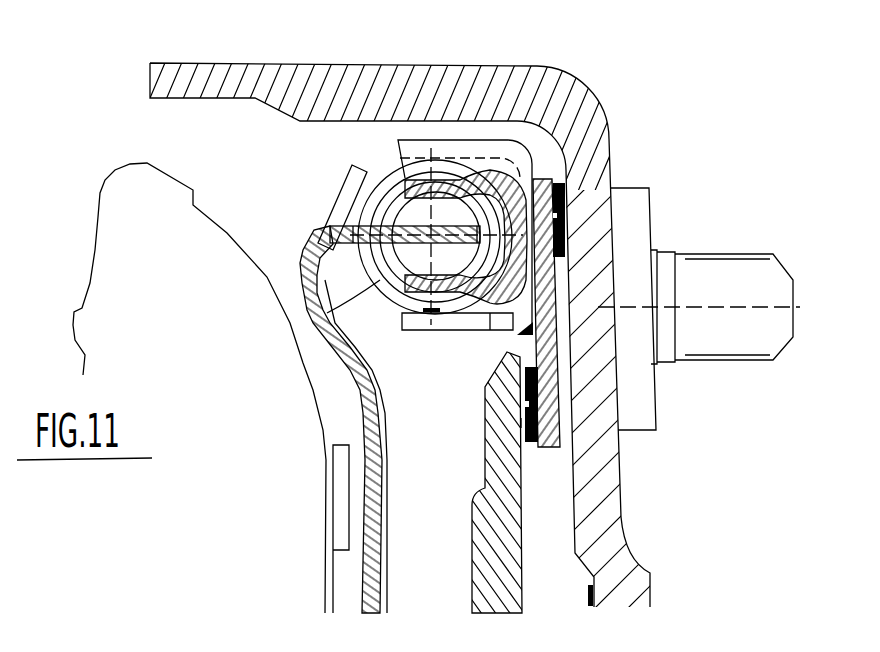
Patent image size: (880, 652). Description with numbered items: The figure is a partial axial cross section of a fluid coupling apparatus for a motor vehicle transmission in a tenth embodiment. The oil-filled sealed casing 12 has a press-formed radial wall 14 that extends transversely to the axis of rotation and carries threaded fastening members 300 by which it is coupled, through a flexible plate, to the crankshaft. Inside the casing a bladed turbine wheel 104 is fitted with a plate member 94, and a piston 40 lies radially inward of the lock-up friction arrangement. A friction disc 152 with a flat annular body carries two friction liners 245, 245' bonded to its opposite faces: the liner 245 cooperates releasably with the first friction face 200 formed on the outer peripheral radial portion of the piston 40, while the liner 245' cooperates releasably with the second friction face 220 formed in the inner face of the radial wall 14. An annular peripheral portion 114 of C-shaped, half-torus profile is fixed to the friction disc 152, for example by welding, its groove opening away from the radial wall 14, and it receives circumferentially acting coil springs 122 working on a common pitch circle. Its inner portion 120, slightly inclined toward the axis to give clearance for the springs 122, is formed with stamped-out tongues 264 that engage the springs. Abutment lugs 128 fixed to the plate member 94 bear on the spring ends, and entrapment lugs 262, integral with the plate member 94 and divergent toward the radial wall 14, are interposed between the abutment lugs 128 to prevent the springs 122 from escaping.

The sealed casing 12 is at (147, 82).
The radial wall 14 is at (620, 572).
The piston 40 is at (493, 570).
The plate member 94 is at (380, 513).
The turbine wheel 104 is at (113, 258).
The annular peripheral portion 114 is at (530, 148).
The inner portion 120 is at (453, 344).
The coil springs 122 is at (431, 236).
The abutment lugs 128 is at (450, 230).
The friction disc 152 is at (545, 385).
The first friction face 200 is at (514, 423).
The second friction face 220 is at (572, 222).
The friction liner 245 is at (629, 432).
The friction liner 245' is at (645, 186).
The entrapment lugs 262 is at (350, 203).
The tongues 264 is at (417, 320).
The threaded fastening members 300 is at (732, 280).